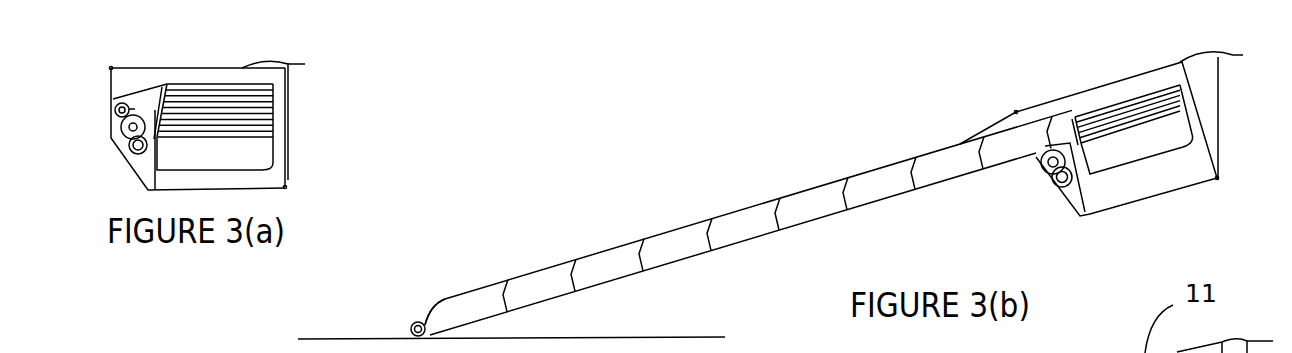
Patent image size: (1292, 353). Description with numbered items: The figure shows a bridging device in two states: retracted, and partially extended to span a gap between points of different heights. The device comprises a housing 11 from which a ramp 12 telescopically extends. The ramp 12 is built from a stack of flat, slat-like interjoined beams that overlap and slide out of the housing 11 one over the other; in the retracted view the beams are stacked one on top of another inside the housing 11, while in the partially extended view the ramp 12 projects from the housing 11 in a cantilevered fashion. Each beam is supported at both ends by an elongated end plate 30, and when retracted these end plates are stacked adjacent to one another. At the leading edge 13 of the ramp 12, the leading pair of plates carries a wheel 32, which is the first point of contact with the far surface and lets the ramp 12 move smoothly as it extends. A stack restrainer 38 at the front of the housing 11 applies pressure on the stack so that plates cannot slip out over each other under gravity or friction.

In FIG. 3A, the housing 11 is at (185, 66).
In FIG. 3B, the housing 11 is at (1048, 102).
In FIG. 3B, the ramp 12 is at (650, 227).
In FIG. 3A, the leading edge 13 is at (155, 114).
In FIG. 3B, the leading edge 13 is at (435, 306).
In FIG. 3A, the end plate 30 is at (250, 152).
In FIG. 3B, the end plate 30 is at (1150, 145).
In FIG. 3A, the wheel 32 is at (117, 104).
In FIG. 3B, the wheel 32 is at (412, 327).
In FIG. 3A, the stack restrainer 38 is at (146, 174).
In FIG. 3B, the stack restrainer 38 is at (1076, 190).